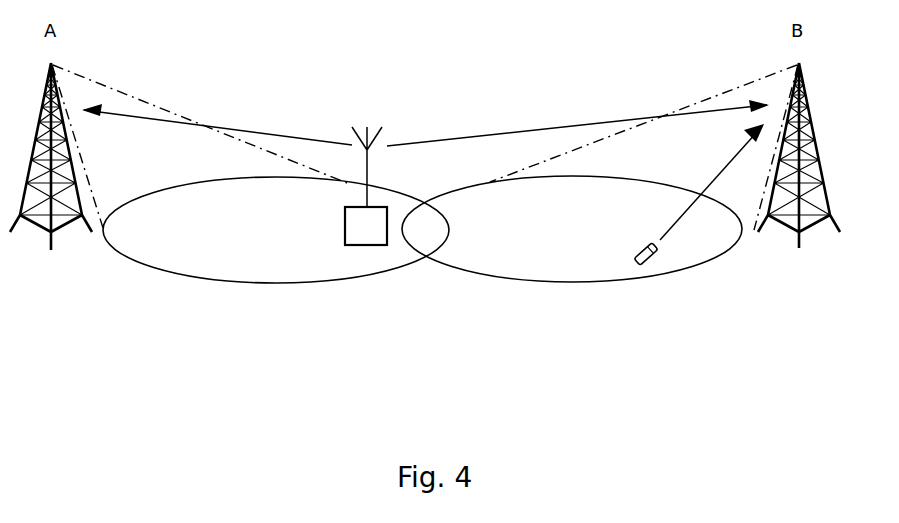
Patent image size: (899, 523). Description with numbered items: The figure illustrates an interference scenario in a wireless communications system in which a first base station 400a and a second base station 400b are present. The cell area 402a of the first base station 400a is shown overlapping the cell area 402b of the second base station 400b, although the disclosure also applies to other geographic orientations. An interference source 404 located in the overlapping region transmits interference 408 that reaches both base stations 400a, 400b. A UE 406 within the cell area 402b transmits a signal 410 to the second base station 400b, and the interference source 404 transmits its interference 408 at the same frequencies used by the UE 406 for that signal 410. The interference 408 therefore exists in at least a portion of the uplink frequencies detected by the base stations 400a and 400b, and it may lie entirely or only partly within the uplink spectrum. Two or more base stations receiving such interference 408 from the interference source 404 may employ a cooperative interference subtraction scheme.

The first base station 400a is at (64, 236).
The second base station 400b is at (812, 235).
The cell area 402a is at (262, 286).
The cell area 402b is at (517, 284).
The interference source 404 is at (368, 246).
The UE 406 is at (650, 262).
The interference 408 is at (297, 137).
The signal 410 is at (679, 224).